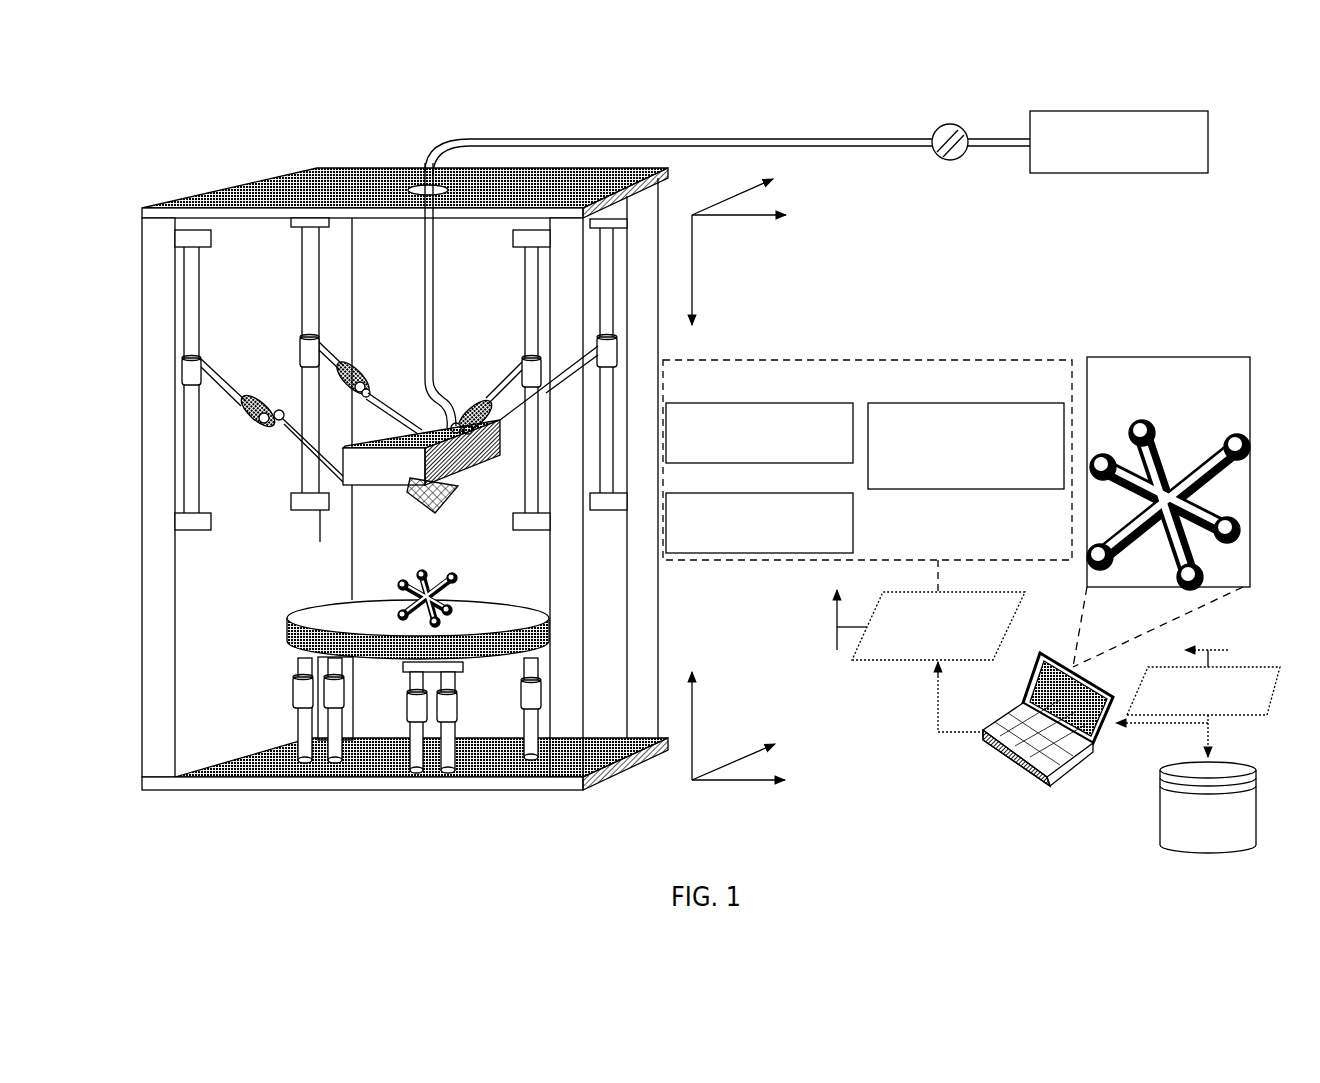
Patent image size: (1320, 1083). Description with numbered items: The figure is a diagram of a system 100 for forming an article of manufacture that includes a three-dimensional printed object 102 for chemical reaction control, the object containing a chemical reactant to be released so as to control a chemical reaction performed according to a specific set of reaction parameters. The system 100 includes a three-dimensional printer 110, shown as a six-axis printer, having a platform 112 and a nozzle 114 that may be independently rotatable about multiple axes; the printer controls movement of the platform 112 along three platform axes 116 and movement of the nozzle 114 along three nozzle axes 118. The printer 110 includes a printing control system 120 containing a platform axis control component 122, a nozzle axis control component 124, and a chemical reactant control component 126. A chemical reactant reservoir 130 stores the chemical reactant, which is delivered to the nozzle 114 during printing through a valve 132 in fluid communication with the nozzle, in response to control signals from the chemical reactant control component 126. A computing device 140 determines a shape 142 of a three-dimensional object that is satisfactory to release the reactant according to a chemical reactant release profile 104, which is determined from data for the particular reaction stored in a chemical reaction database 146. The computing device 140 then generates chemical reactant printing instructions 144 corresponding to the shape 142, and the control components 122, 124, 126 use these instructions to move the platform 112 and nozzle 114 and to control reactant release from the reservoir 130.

The system 100 is at (1131, 68).
The 3D printed object 102 is at (396, 584).
The chemical reactant release profile 104 is at (1264, 708).
The 3D printer 110 is at (586, 491).
The platform 112 is at (455, 660).
The nozzle 114 is at (452, 514).
The platform axes 116 is at (756, 734).
The nozzle axes 118 is at (758, 260).
The 3D printing control system 120 is at (990, 386).
The platform axis control component 122 is at (833, 546).
The nozzle axis control component 124 is at (833, 455).
The chemical reactant control component 126 is at (952, 481).
The chemical reactant reservoir 130 is at (1185, 165).
The valve 132 is at (950, 124).
The computing device 140 is at (1047, 734).
The shape of 3D object 142 is at (1205, 418).
The chemical reactant 3D printing instructions 144 is at (986, 653).
The chemical reaction database 146 is at (1198, 852).